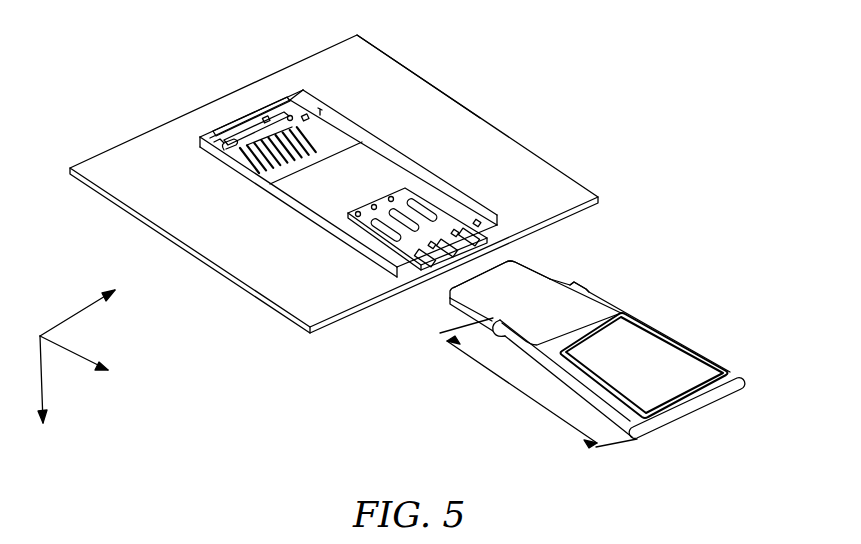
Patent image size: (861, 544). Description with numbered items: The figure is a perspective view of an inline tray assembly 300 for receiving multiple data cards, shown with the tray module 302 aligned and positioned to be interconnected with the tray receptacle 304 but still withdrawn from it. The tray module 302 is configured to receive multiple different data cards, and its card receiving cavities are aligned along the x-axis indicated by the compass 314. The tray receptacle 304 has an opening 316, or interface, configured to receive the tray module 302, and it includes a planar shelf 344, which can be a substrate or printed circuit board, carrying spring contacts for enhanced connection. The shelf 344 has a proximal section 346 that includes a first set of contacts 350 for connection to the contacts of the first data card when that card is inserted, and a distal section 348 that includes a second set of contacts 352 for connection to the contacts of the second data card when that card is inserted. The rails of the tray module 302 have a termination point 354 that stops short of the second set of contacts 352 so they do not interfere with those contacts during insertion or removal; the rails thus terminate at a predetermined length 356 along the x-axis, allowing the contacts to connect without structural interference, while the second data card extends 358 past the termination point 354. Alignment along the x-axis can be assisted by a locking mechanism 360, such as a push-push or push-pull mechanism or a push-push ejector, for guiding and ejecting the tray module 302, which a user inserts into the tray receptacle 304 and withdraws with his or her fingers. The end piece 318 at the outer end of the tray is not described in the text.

The inline tray assembly 300 is at (683, 40).
The tray module 302 is at (623, 312).
The tray receptacle 304 is at (545, 164).
The compass 314 is at (78, 311).
The opening 316 is at (407, 270).
The tray end cap 318 is at (697, 408).
The planar shelf 344 is at (393, 61).
The proximal section 346 is at (367, 228).
The distal section 348 is at (243, 152).
The first set of contacts 350 is at (405, 190).
The second set of contacts 352 is at (304, 120).
The termination point 354 is at (577, 284).
The predetermined length 356 is at (512, 392).
The extension 358 is at (524, 268).
The locking mechanism 360 is at (754, 369).